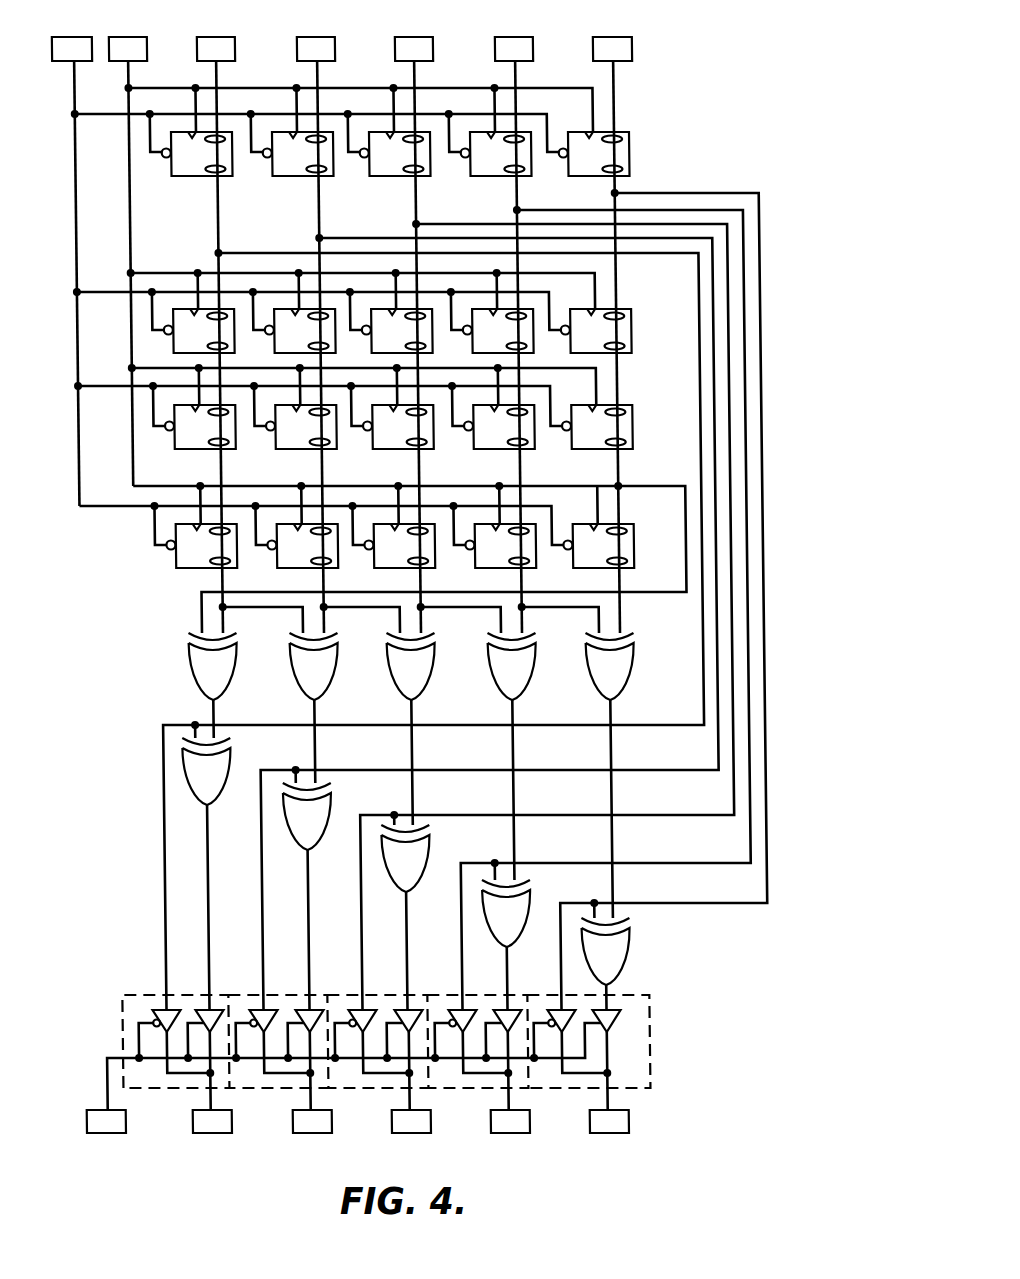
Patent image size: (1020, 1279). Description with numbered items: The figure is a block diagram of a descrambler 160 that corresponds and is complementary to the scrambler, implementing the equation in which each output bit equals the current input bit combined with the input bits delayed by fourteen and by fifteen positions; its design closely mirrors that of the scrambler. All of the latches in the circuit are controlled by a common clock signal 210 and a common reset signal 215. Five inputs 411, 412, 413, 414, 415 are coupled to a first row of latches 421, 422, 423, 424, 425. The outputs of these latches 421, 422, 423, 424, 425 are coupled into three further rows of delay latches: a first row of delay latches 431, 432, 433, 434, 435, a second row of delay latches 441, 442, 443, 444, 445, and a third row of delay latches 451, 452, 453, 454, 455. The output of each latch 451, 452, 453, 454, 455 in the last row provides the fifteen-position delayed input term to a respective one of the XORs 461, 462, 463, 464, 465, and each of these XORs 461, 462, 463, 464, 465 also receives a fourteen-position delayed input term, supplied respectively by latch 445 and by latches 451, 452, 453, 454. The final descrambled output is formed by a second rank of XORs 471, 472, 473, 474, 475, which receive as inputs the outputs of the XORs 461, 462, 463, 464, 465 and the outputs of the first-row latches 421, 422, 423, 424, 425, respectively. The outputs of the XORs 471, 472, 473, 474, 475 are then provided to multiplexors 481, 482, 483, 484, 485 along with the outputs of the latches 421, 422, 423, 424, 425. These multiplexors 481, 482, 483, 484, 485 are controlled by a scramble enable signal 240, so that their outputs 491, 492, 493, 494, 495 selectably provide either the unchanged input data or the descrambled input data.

The descrambler 160 is at (705, 1098).
The clock signal 210 is at (139, 37).
The reset signal 215 is at (81, 37).
The scramble enable signal 240 is at (113, 1120).
The input 411 is at (226, 37).
The input 412 is at (324, 37).
The input 413 is at (428, 37).
The input 414 is at (524, 37).
The input 415 is at (626, 37).
The latch 421 is at (182, 176).
The latch 422 is at (283, 176).
The latch 423 is at (380, 176).
The latch 424 is at (481, 176).
The latch 425 is at (583, 176).
The delay latch 431 is at (172, 353).
The delay latch 432 is at (275, 352).
The delay latch 433 is at (371, 352).
The delay latch 434 is at (473, 352).
The delay latch 435 is at (628, 322).
The delay latch 441 is at (180, 449).
The delay latch 442 is at (282, 449).
The delay latch 443 is at (380, 449).
The delay latch 444 is at (482, 449).
The delay latch 445 is at (580, 449).
The delay latch 451 is at (179, 568).
The delay latch 452 is at (272, 568).
The delay latch 453 is at (369, 568).
The delay latch 454 is at (469, 568).
The delay latch 455 is at (568, 568).
The XOR 461 is at (226, 656).
The XOR 462 is at (327, 656).
The XOR 463 is at (424, 656).
The XOR 464 is at (525, 656).
The XOR 465 is at (623, 656).
The XOR 471 is at (213, 797).
The XOR 472 is at (313, 842).
The XOR 473 is at (411, 884).
The XOR 474 is at (511, 939).
The XOR 475 is at (616, 952).
The multiplexor 481 is at (111, 1000).
The multiplexor 482 is at (270, 993).
The multiplexor 483 is at (370, 993).
The multiplexor 484 is at (475, 993).
The multiplexor 485 is at (638, 1023).
The output 491 is at (219, 1120).
The output 492 is at (319, 1120).
The output 493 is at (418, 1120).
The output 494 is at (517, 1120).
The output 495 is at (616, 1120).